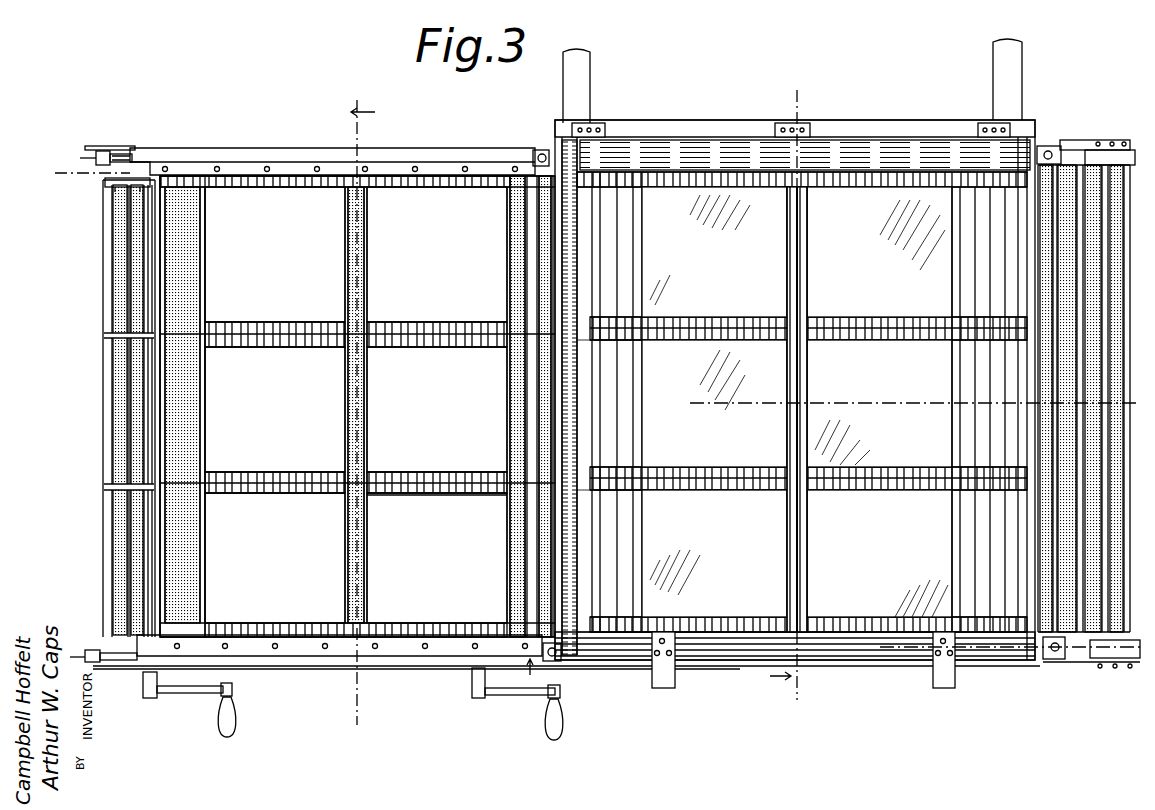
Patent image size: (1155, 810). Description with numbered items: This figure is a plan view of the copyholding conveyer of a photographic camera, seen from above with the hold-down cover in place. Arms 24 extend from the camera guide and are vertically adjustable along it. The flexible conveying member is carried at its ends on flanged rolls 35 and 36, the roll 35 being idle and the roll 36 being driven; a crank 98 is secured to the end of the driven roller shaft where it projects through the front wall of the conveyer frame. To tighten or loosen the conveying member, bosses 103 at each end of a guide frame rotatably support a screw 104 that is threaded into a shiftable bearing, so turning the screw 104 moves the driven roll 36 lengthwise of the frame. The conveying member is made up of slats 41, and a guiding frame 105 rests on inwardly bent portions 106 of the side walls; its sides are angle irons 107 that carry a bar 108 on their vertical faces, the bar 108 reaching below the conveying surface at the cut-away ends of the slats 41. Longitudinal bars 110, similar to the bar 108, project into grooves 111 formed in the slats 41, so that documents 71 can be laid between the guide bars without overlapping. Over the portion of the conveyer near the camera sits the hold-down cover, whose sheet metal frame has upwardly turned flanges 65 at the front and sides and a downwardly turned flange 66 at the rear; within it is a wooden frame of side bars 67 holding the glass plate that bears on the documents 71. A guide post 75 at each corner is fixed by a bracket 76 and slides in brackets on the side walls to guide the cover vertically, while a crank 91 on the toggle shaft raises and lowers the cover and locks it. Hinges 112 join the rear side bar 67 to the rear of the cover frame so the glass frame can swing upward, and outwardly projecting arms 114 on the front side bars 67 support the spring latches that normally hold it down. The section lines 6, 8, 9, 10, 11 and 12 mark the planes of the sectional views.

The section line 6- 6 is at (820, 660).
The section line 8- 8 is at (786, 391).
The section line 9- 9 is at (905, 402).
The section line 10- 10 is at (95, 644).
The section line 11- 11 is at (355, 403).
The section line 12- 12 is at (162, 168).
The arms 24 is at (585, 100).
The flanged roll 35 is at (1104, 168).
The flanged roll 36 is at (112, 188).
The slats 41 is at (113, 460).
The upwardly turned flanges 65 is at (905, 662).
The downwardly turned flange 66 is at (898, 126).
The side bars 67 is at (718, 150).
The documents 71 is at (714, 252).
The guide post 75 is at (543, 150).
The bracket 76 is at (538, 156).
The crank 91 is at (530, 695).
The crank 98 is at (193, 695).
The bosses 103 is at (118, 152).
The screw 104 is at (96, 158).
The frame 105 is at (158, 407).
The inwardly bent portions 106 is at (312, 667).
The angle irons 107 is at (285, 657).
The bar 108 is at (442, 188).
The bars 110 is at (428, 325).
The grooves 111 is at (460, 494).
The hinges 112 is at (803, 124).
The arms 114 is at (670, 686).